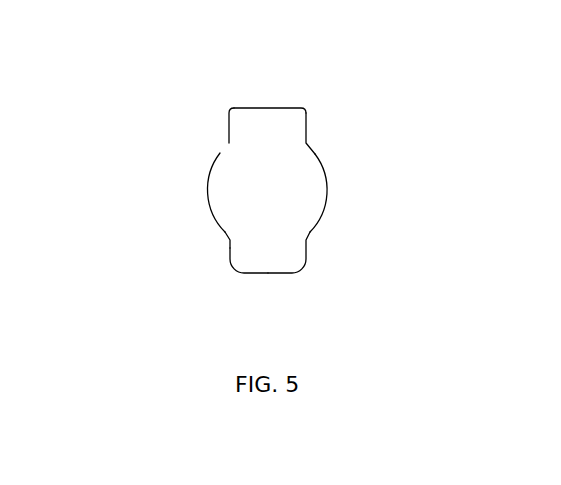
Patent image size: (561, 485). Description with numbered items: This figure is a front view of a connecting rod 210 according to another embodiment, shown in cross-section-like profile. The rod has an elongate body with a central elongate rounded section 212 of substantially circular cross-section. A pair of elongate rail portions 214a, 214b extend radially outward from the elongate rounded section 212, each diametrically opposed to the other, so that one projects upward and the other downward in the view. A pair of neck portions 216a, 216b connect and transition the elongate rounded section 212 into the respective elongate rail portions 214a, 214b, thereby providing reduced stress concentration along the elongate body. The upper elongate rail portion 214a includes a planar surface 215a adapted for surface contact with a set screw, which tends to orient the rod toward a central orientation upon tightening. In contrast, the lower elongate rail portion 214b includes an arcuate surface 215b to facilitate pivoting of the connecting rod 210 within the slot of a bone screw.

The connecting rod 210 is at (372, 167).
The elongate rounded section 212 is at (300, 187).
The elongate rail portion 214a is at (272, 123).
The planar surface 215a is at (243, 108).
The neck portion 216a is at (306, 126).
The elongate rail portion 214b is at (286, 257).
The arcuate surface 215b is at (248, 272).
The neck portion 216b is at (230, 248).